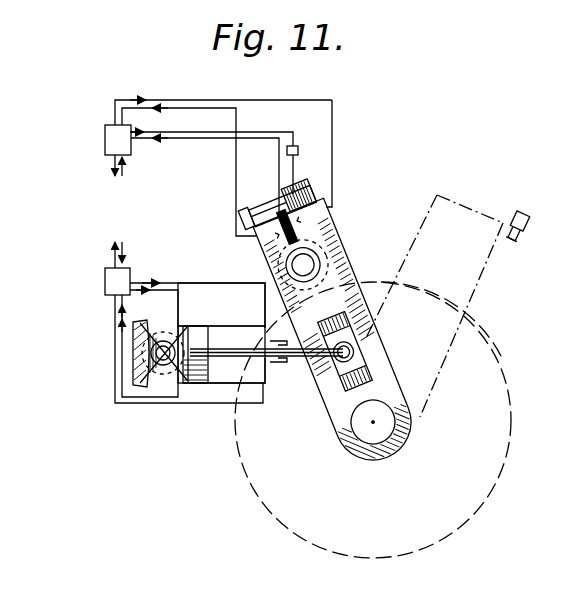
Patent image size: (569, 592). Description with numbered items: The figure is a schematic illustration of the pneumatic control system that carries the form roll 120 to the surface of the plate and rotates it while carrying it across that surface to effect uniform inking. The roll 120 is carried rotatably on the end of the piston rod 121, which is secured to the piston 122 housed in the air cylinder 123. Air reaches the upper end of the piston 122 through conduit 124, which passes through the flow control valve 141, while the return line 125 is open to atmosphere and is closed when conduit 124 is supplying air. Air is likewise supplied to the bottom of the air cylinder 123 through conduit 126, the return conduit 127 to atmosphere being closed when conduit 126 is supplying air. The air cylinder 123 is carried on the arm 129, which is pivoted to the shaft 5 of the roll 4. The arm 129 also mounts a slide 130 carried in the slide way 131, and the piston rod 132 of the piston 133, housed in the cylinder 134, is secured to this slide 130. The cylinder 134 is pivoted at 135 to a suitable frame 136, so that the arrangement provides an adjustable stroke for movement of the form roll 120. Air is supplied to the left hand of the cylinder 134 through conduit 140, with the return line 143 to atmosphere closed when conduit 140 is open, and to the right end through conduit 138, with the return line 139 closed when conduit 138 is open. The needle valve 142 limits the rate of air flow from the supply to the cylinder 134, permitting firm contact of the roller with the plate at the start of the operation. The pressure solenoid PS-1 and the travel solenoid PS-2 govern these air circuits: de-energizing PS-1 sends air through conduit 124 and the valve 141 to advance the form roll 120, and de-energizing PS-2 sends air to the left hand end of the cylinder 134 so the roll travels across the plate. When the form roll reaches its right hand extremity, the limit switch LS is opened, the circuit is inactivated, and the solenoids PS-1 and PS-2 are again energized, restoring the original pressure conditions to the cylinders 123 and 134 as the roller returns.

The roll 4 is at (312, 537).
The shaft 5 is at (383, 422).
The form roll 120 is at (330, 246).
The piston rod 121 is at (312, 230).
The piston 122 is at (246, 218).
The air cylinder 123 is at (318, 212).
The conduit 124 is at (253, 130).
The return line 125 is at (215, 140).
The conduit 126 is at (332, 100).
The return conduit 127 is at (188, 108).
The arm 129 is at (330, 398).
The slide 130 is at (488, 347).
The slide way 131 is at (345, 330).
The piston rod 132 is at (300, 364).
The piston 133 is at (200, 335).
The cylinder 134 is at (230, 384).
The pivot 135 is at (145, 322).
The frame 136 is at (140, 365).
The conduit 138 is at (230, 283).
The return line 139 is at (206, 384).
The conduit 140 is at (150, 343).
The flow control valve 141 is at (298, 151).
The needle valve 142 is at (184, 304).
The return line 143 is at (120, 400).
The pressure solenoid PS-1 is at (105, 150).
The travel solenoid PS-2 is at (105, 284).
The limit switch LS is at (522, 212).